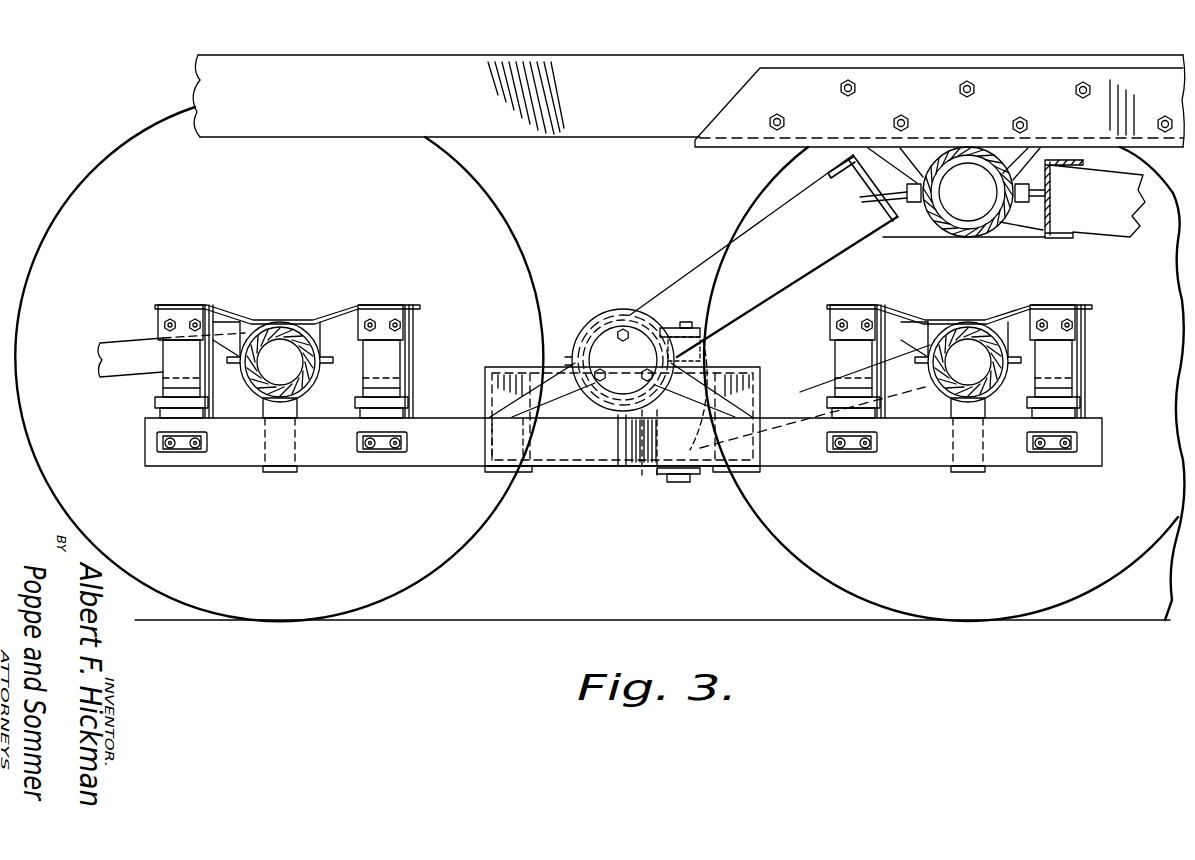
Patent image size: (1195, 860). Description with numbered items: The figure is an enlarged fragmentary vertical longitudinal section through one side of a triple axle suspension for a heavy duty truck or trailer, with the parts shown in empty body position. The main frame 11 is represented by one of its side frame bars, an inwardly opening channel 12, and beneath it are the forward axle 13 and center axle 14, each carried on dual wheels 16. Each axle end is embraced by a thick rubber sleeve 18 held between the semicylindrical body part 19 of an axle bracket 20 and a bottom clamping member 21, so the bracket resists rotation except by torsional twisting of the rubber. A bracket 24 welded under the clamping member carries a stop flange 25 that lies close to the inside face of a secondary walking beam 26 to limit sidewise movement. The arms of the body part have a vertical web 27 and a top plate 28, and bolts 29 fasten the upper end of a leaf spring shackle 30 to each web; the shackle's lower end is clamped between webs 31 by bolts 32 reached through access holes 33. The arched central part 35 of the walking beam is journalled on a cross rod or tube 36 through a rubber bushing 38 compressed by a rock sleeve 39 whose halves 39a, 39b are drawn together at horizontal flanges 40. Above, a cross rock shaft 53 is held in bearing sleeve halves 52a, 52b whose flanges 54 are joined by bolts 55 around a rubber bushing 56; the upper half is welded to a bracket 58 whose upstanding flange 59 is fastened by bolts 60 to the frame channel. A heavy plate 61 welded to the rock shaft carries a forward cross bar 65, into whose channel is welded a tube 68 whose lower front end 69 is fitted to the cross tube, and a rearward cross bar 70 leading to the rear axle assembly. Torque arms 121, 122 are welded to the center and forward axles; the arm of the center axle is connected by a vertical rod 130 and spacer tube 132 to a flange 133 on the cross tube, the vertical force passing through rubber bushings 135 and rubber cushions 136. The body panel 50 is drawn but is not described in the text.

The main frame 11 is at (262, 53).
The inwardly opening channel 12 is at (197, 80).
The forward axle 13 is at (285, 330).
The center axle 14 is at (972, 332).
The dual wheels 16 is at (85, 178).
The rubber sleeve 18 is at (624, 362).
The body part 19 is at (365, 305).
The axle bracket 20 is at (240, 305).
The bottom clamping member 21 is at (322, 390).
The bracket 24 is at (280, 474).
The stop flange 25 is at (275, 472).
The secondary walking beam 26 is at (432, 467).
The vertical web 27 is at (350, 312).
The top plate 28 is at (402, 310).
The bolts 29 is at (196, 318).
The leaf spring shackle 30 is at (165, 360).
The webs 31 is at (188, 455).
The bolts 32 is at (195, 438).
The access holes 33 is at (205, 446).
The arched central part 35 is at (540, 440).
The cross rod or tube 36 is at (622, 419).
The rubber bushing 38 is at (618, 328).
The rock sleeve 39 is at (572, 332).
The upper half of rock sleeve 39a is at (600, 318).
The lower half of rock sleeve 39b is at (621, 390).
The horizontal flanges 40 is at (568, 356).
The body panel 50 is at (1130, 240).
The upper bearing sleeve half 52a is at (998, 145).
The lower bearing sleeve half 52b is at (955, 237).
The cross rock shaft 53 is at (968, 192).
The flanges 54 is at (862, 199).
The bolts 55 is at (907, 185).
The rubber bushing 56 is at (1021, 226).
The bracket 58 is at (722, 100).
The upstanding flange 59 is at (1060, 72).
The bolts 60 is at (858, 88).
The heavy plate or block 61 is at (897, 237).
The cross bar 65 is at (835, 162).
The tube 68 is at (760, 228).
The lower front end of tube 69 is at (645, 312).
The cross bar 70 is at (1062, 235).
The torque arm 121 is at (798, 400).
The torque arm 122 is at (105, 343).
The vertical rod 130 is at (678, 483).
The spacer tube 132 is at (708, 345).
The flange 133 is at (700, 330).
The rubber bushings 135 is at (652, 462).
The rubber cushions 136 is at (690, 320).